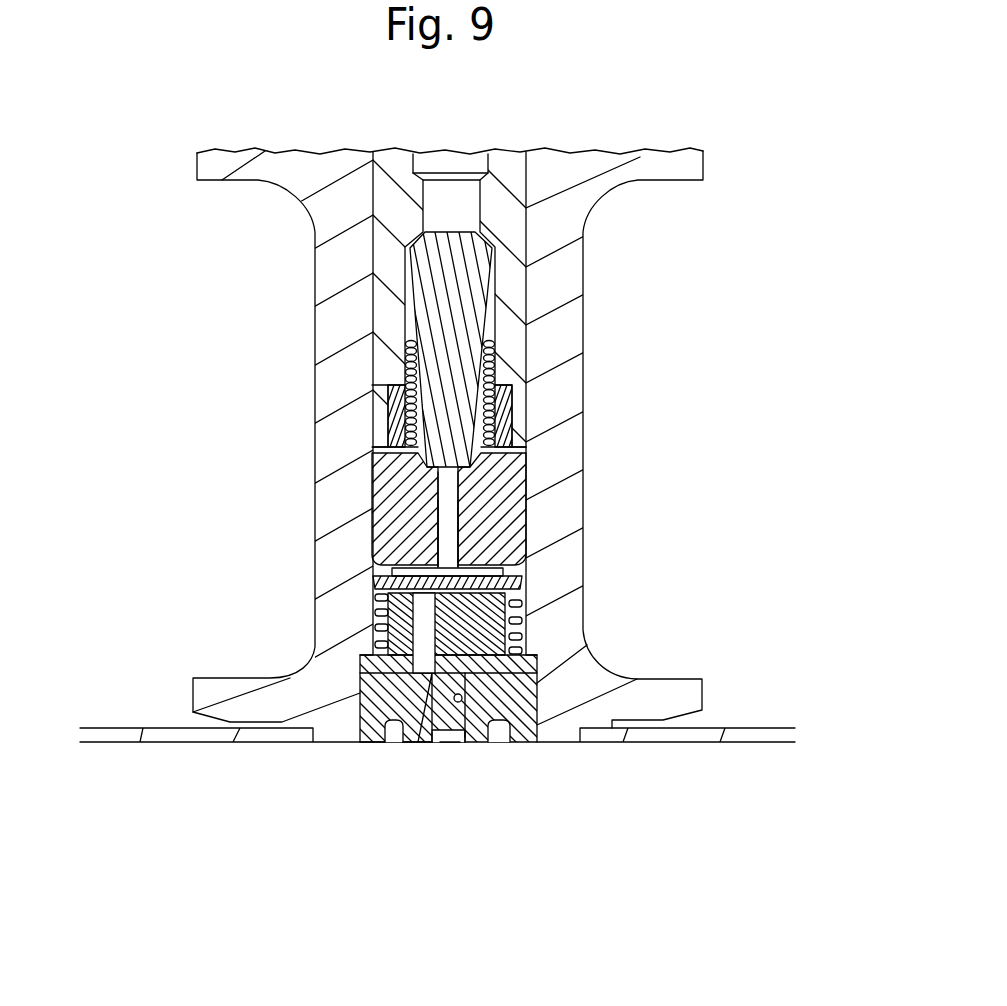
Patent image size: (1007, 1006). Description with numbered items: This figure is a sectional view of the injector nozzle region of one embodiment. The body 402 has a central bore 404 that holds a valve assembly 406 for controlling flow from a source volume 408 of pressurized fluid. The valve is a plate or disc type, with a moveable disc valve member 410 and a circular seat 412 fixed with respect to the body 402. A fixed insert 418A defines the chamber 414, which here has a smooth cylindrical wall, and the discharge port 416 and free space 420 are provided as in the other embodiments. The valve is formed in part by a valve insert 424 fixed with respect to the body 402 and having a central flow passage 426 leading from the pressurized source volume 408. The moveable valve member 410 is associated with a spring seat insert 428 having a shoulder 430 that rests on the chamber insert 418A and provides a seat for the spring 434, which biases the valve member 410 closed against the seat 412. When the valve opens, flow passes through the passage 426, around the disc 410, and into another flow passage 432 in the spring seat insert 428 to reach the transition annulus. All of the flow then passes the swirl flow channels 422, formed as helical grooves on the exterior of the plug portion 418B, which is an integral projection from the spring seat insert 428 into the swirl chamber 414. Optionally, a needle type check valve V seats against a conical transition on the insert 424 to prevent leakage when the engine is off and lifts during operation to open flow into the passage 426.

The body 402 is at (585, 258).
The central bore 404 is at (522, 305).
The valve assembly 406 is at (519, 469).
The source volume 408 is at (497, 420).
The moveable disc valve member 410 is at (524, 578).
The circular seat 412 is at (527, 553).
The chamber 414 is at (468, 707).
The discharge port 416 is at (437, 742).
The fixed insert 418A is at (365, 742).
The plug portion 418B is at (412, 742).
The free space 420 is at (465, 742).
The swirl flow channels 422 is at (414, 743).
The valve insert 424 is at (447, 485).
The central flow passage 426 is at (447, 510).
The spring seat insert 428 is at (398, 648).
The shoulder 430 is at (380, 644).
The flow passage 432 is at (422, 637).
The spring 434 is at (375, 612).
The needle type check valve V is at (423, 313).